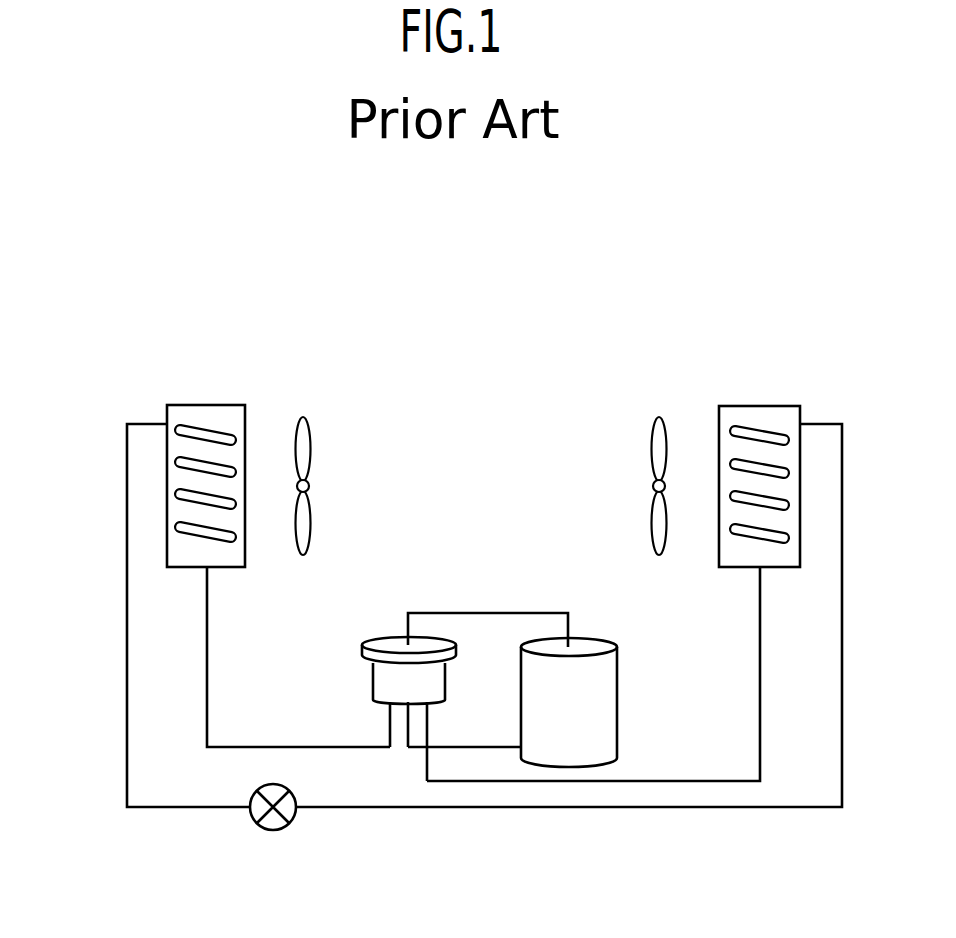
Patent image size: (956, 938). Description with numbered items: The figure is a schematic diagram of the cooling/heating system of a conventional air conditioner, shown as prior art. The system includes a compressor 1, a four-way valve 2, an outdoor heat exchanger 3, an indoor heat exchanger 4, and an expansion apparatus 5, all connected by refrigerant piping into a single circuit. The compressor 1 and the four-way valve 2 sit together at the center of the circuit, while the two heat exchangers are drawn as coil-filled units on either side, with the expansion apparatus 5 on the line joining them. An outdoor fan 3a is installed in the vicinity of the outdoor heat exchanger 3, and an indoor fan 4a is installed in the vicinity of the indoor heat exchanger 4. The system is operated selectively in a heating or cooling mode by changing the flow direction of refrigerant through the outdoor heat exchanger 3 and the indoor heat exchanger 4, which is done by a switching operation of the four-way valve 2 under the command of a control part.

The compressor 1 is at (610, 727).
The four-way valve 2 is at (380, 678).
The outdoor heat exchanger 3 is at (768, 406).
The outdoor fan 3a is at (656, 534).
The indoor heat exchanger 4 is at (200, 405).
The indoor fan 4a is at (306, 534).
The expansion apparatus 5 is at (274, 830).